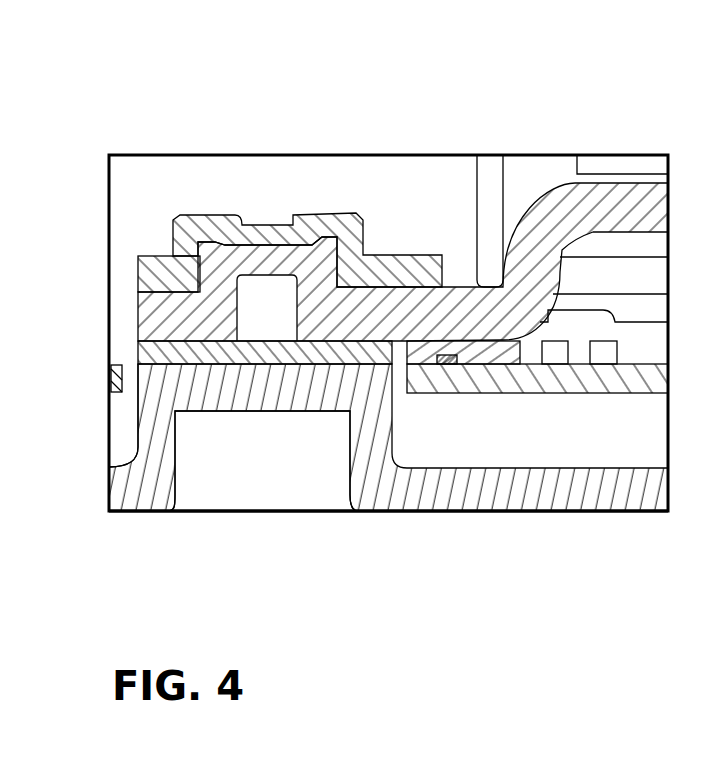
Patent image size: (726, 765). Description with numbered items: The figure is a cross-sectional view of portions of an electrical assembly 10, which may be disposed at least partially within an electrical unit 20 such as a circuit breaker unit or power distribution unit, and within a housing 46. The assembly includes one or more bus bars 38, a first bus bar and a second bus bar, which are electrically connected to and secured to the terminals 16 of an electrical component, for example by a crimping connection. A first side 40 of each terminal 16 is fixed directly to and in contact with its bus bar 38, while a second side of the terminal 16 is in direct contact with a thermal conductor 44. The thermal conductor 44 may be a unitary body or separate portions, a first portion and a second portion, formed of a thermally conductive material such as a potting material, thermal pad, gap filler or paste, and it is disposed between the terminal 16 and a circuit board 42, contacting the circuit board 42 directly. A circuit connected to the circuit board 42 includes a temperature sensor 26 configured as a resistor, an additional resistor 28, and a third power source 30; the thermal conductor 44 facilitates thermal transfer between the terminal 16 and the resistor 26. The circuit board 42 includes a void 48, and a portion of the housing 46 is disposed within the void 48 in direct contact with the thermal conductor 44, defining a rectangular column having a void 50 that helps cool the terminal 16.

The electrical assembly 10 is at (224, 124).
The terminal 16 is at (163, 313).
The electrical unit 20 is at (194, 524).
The temperature sensor 26 is at (450, 364).
The additional resistor 28 is at (555, 353).
The third power source 30 is at (600, 353).
The bus bar 38 is at (187, 213).
The side of terminal 40 is at (393, 340).
The circuit board 42 is at (110, 380).
The thermal conductor 44 is at (155, 352).
The housing 46 is at (305, 390).
The void 48 is at (126, 400).
The void 50 is at (253, 480).